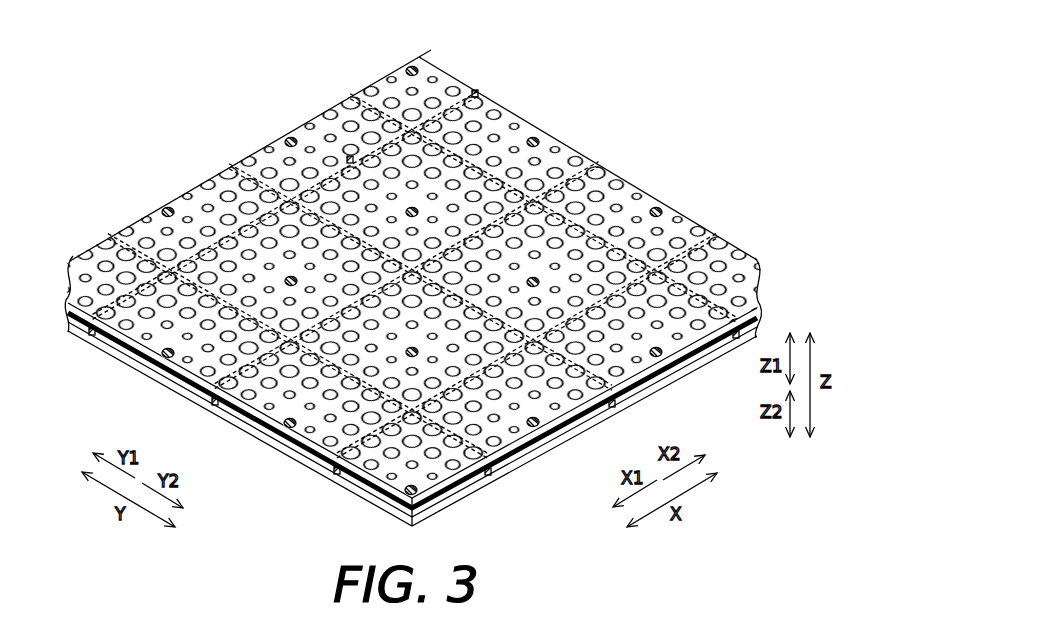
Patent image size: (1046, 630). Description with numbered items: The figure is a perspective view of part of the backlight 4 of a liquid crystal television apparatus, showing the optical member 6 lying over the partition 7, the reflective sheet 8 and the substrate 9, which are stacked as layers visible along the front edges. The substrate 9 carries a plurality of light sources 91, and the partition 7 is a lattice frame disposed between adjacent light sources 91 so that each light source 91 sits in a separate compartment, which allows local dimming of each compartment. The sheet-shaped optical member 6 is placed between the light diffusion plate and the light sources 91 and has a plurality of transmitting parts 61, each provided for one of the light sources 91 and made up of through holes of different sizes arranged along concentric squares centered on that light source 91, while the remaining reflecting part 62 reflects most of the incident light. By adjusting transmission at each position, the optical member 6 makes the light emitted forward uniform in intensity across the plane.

The backlight 4 is at (578, 67).
The optical member 6 is at (137, 347).
The partition 7 is at (581, 156).
The reflective sheet 8 is at (143, 369).
The substrate 9 is at (170, 388).
The transmitting parts 61 is at (327, 107).
The reflecting part 62 is at (300, 130).
The light sources 91 is at (413, 207).